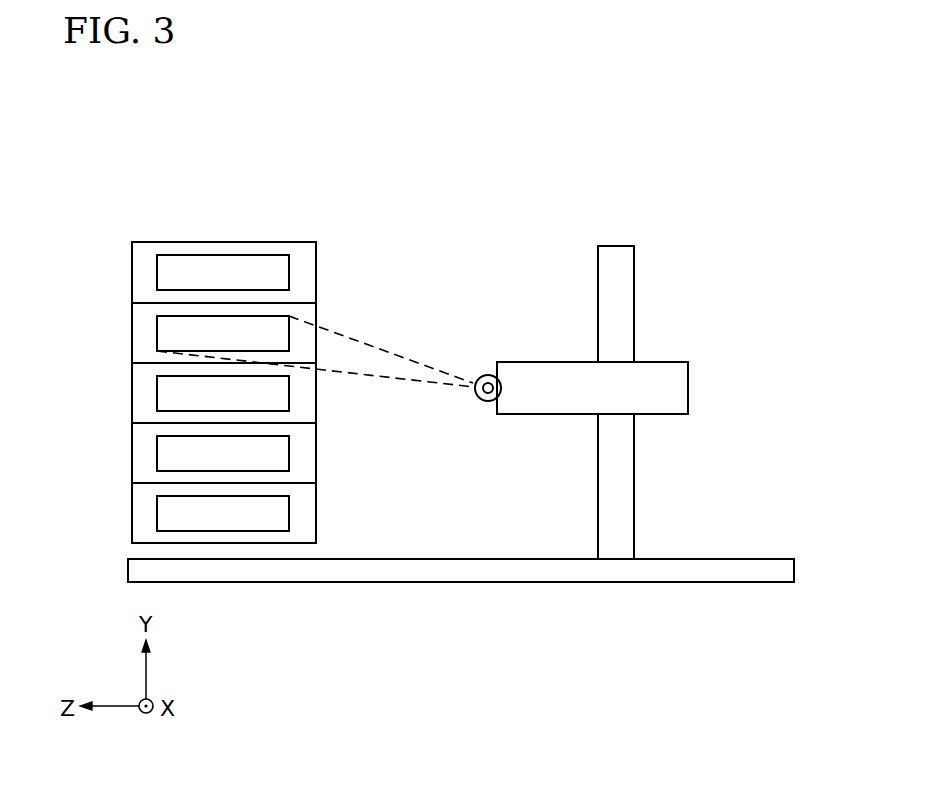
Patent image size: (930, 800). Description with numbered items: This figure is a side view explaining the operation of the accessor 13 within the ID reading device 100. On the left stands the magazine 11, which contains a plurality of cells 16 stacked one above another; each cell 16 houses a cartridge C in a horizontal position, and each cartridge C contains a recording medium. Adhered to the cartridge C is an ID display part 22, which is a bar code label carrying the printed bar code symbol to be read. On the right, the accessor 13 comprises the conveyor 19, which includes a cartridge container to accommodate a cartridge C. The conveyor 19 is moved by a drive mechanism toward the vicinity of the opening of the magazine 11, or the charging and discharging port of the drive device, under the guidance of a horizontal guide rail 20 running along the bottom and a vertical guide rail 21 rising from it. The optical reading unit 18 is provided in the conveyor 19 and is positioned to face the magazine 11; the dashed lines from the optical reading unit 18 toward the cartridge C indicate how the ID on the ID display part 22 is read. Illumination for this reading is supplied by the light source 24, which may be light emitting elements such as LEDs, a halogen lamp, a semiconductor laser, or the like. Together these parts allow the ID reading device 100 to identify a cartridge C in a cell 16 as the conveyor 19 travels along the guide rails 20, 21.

The ID reading device 100 is at (679, 137).
The magazine 11 is at (290, 242).
The cells 16 is at (152, 243).
The ID display part 22 is at (170, 330).
The cartridge C is at (307, 310).
The accessor 13 is at (570, 362).
The vertical guide rail 21 is at (622, 282).
The conveyor 19 is at (670, 370).
The optical reading unit 18 is at (492, 402).
The light source 24 is at (500, 385).
The horizontal guide rail 20 is at (558, 570).